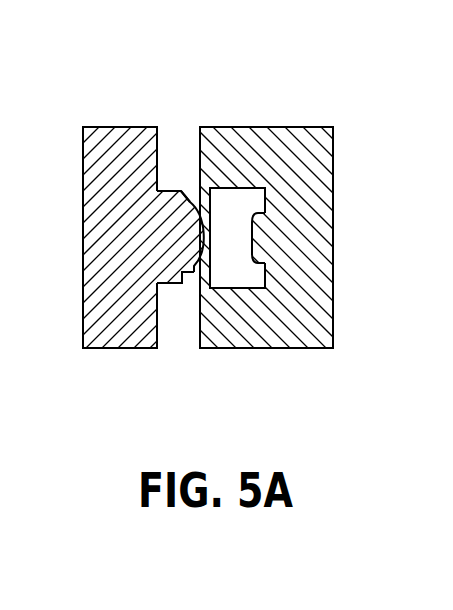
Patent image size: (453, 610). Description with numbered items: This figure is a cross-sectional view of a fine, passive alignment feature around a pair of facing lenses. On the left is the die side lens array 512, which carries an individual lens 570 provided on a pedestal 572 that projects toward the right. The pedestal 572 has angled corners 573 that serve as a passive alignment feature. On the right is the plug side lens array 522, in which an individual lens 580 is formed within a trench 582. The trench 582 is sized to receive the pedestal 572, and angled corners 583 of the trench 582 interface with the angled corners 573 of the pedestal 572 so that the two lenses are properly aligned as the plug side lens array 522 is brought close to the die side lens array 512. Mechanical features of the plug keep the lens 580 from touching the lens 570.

The die side lens array 512 is at (110, 126).
The plug side lens array 522 is at (293, 127).
The lens 570 is at (198, 239).
The pedestal 572 is at (168, 284).
The angled corners 573 is at (176, 200).
The lens 580 is at (255, 238).
The trench 582 is at (229, 261).
The angled corners 583 is at (206, 187).